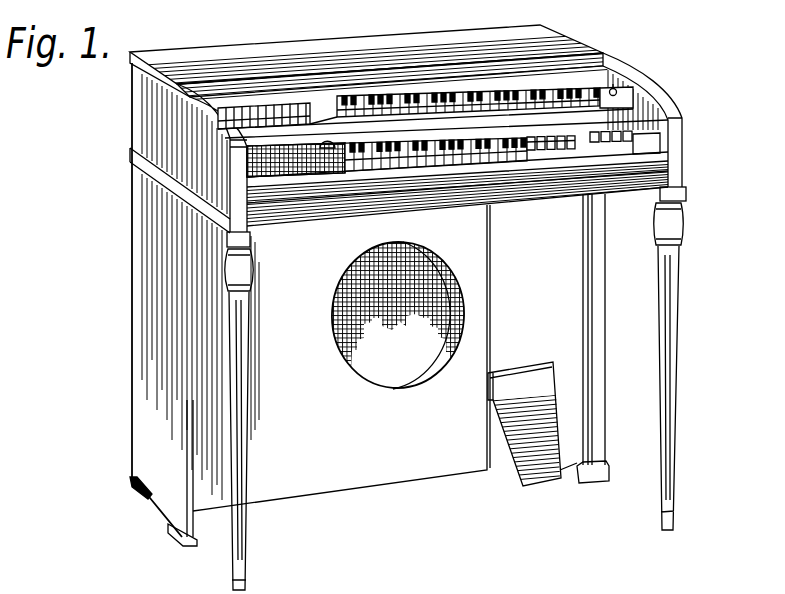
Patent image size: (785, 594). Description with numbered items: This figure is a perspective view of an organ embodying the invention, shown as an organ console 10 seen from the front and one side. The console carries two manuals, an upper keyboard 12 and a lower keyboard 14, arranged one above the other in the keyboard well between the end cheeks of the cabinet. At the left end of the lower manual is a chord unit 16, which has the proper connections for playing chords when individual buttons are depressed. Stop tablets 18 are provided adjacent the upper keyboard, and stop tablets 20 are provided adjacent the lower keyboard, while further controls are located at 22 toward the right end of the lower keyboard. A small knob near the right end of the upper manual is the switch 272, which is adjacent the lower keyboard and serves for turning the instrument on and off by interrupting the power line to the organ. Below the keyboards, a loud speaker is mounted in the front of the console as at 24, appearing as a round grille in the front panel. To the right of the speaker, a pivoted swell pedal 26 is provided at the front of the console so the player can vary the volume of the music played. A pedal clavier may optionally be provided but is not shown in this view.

The organ console 10 is at (128, 276).
The upper keyboard 12 is at (586, 97).
The lower keyboard 14 is at (493, 160).
The chord unit 16 is at (328, 157).
The stop tablets 18 is at (304, 108).
The stop tablets 20 is at (575, 146).
The further controls 22 is at (624, 128).
The switch 272 is at (618, 90).
The loud speaker 24 is at (460, 305).
The swell pedal 26 is at (497, 427).